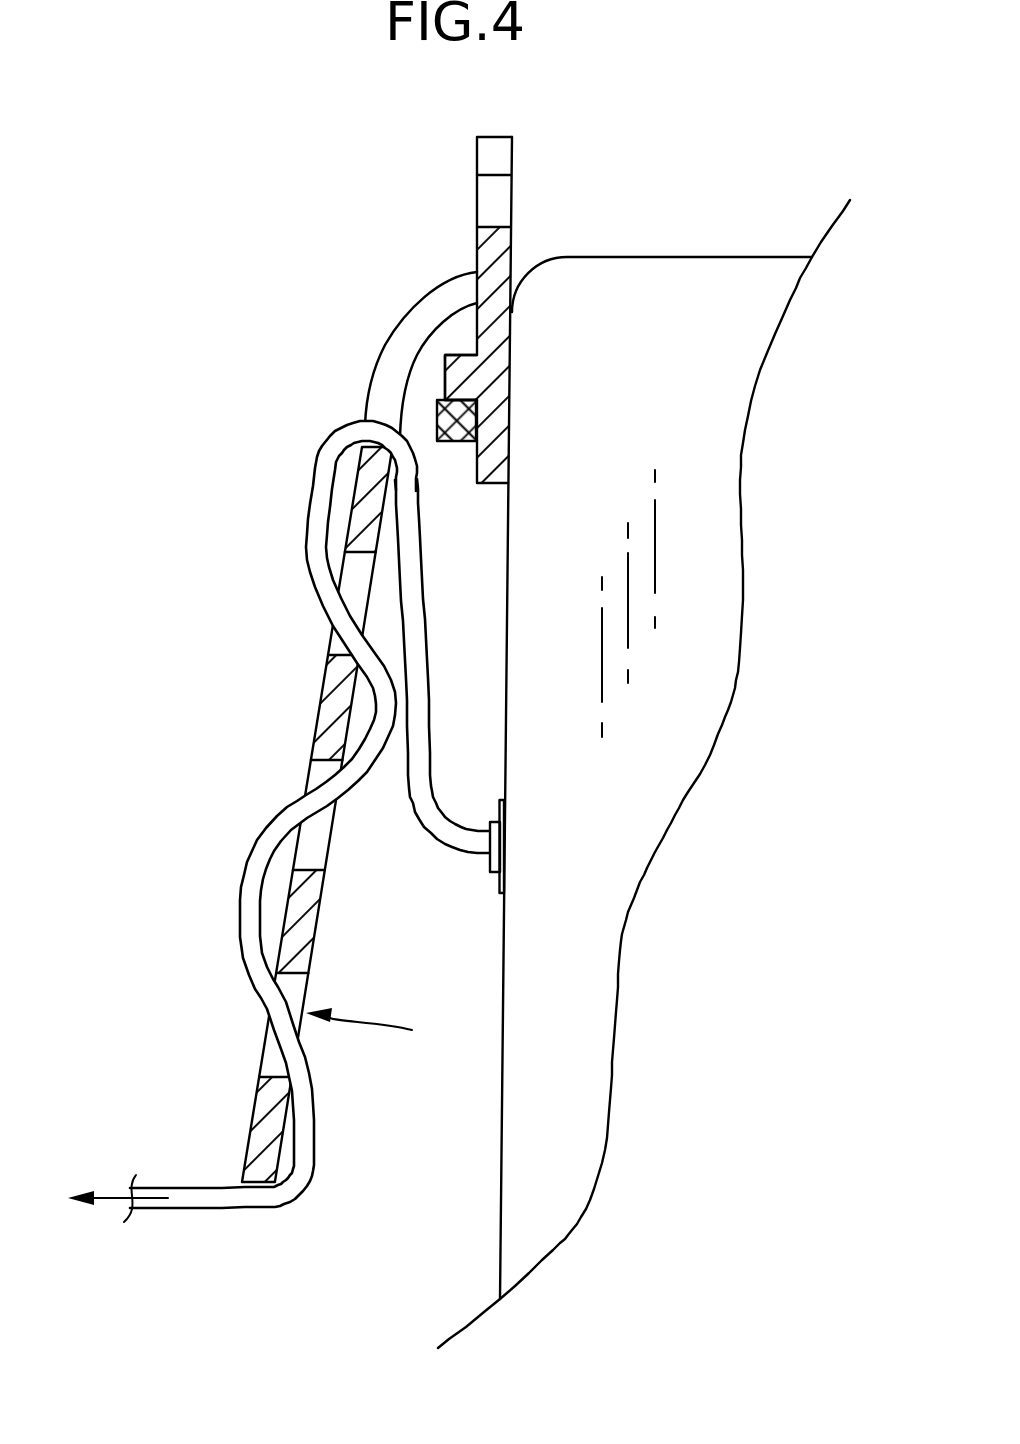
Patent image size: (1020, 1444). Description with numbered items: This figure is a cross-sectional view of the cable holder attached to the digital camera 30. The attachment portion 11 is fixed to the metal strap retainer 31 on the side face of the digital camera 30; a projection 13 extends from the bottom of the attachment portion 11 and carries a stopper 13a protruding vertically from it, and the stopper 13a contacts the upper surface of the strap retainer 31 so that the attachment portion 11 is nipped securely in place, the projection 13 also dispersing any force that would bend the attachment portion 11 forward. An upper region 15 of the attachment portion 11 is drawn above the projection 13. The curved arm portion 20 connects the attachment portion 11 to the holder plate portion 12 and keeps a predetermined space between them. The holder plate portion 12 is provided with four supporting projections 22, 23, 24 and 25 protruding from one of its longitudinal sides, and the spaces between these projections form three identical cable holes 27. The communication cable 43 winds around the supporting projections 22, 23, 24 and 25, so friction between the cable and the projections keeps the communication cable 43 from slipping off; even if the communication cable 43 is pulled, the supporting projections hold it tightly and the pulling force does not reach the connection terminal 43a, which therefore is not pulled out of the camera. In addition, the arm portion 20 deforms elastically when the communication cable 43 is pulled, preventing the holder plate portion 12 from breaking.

The attachment portion 11 is at (448, 310).
The holder plate portion 12 is at (260, 814).
The projection 13 is at (448, 355).
The stopper 13a is at (445, 371).
The upper portion of fixing member 15 is at (486, 207).
The arm portion 20 is at (432, 315).
The supporting projection 22 is at (380, 500).
The supporting projection 23 is at (327, 690).
The supporting projection 24 is at (292, 917).
The supporting projection 25 is at (263, 1117).
The cable hole 27 is at (357, 598).
The digital camera 30 is at (678, 303).
The strap retainer 31 is at (453, 420).
The communication cable 43 is at (323, 490).
The connection terminal 43a is at (488, 862).